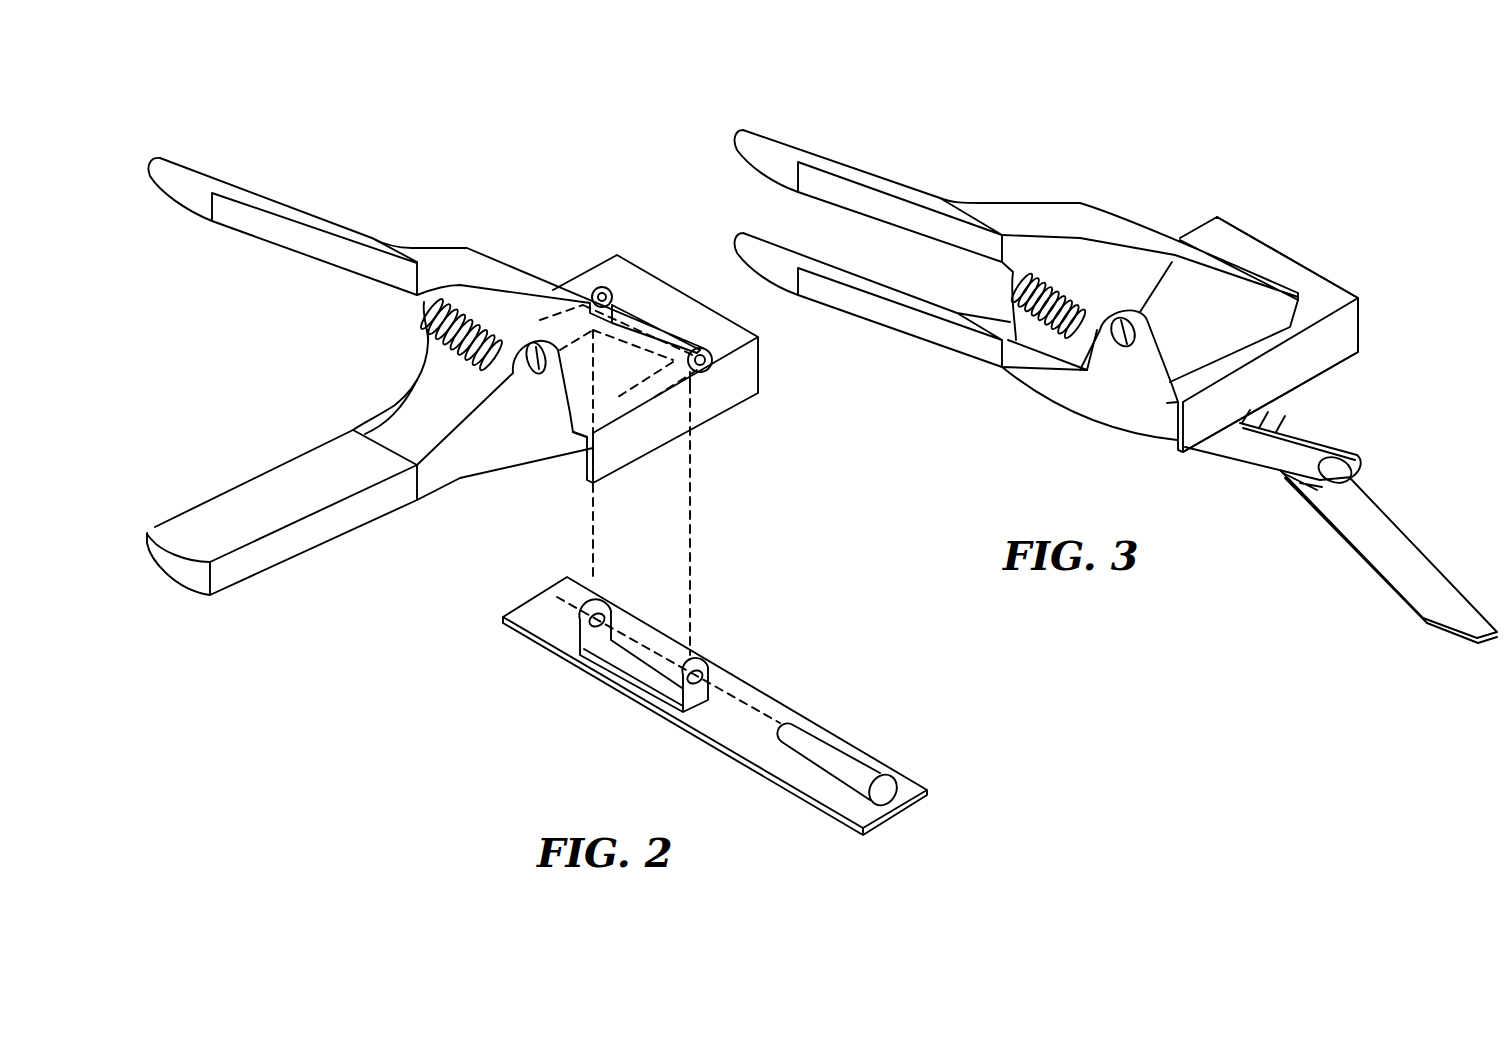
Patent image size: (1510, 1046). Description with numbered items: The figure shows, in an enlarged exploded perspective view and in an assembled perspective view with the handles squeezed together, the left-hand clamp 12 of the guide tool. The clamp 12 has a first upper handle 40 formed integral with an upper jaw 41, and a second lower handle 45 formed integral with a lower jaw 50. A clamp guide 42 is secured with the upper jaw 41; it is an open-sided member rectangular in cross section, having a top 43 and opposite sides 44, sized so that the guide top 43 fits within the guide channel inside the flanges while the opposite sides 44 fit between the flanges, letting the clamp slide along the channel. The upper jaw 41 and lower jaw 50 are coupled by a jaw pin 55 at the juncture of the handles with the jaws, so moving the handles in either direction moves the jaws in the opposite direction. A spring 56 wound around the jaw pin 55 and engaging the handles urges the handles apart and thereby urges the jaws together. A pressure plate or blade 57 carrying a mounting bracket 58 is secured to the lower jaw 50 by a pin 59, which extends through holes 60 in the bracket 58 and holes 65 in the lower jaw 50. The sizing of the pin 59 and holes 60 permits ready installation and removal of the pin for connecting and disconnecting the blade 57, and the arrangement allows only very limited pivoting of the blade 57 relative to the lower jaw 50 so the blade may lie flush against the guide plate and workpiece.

In FIG. 2, the left-hand clamp 12 is at (259, 192).
In FIG. 3, the left-hand clamp 12 is at (898, 183).
In FIG. 2, the first upper handle 40 is at (273, 228).
In FIG. 3, the first upper handle 40 is at (852, 197).
In FIG. 2, the upper jaw 41 is at (634, 302).
In FIG. 3, the upper jaw 41 is at (1142, 235).
In FIG. 2, the clamp guide 42 is at (725, 335).
In FIG. 3, the clamp guide 42 is at (1335, 300).
In FIG. 3, the top 43 is at (1233, 237).
In FIG. 3, the opposite sides 44 is at (1348, 333).
In FIG. 2, the second lower handle 45 is at (287, 547).
In FIG. 2, the lower jaw 50 is at (470, 413).
In FIG. 3, the lower jaw 50 is at (1164, 399).
In FIG. 2, the jaw pin 55 is at (531, 395).
In FIG. 3, the jaw pin 55 is at (1119, 347).
In FIG. 2, the spring 56 is at (443, 333).
In FIG. 3, the spring 56 is at (1050, 330).
In FIG. 2, the pressure plate or blade 57 is at (768, 753).
In FIG. 3, the pressure plate or blade 57 is at (1403, 583).
In FIG. 2, the mounting bracket 58 is at (668, 654).
In FIG. 2, the pin 59 is at (837, 767).
In FIG. 3, the pin 59 is at (1343, 470).
In FIG. 2, the holes 60 is at (607, 620).
In FIG. 2, the holes 65 is at (592, 290).